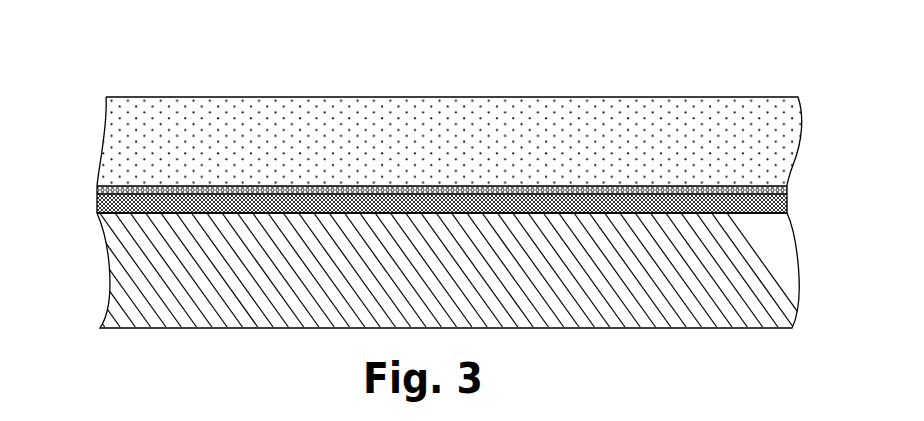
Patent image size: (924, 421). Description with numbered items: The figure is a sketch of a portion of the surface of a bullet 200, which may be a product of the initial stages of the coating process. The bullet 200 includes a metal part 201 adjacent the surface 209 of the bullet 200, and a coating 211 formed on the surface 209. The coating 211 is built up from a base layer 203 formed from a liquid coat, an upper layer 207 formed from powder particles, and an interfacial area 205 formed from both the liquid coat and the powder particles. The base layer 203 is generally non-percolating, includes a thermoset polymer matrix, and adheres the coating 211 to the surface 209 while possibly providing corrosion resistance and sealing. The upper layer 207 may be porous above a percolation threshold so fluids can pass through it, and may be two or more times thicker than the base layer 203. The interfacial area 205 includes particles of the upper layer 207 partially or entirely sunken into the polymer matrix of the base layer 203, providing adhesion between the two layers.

The bullet 200 is at (128, 57).
The metal part 201 is at (778, 278).
The base layer 203 is at (788, 208).
The interfacial area 205 is at (788, 188).
The upper layer 207 is at (787, 166).
The surface 209 is at (737, 205).
The coating 211 is at (95, 95).